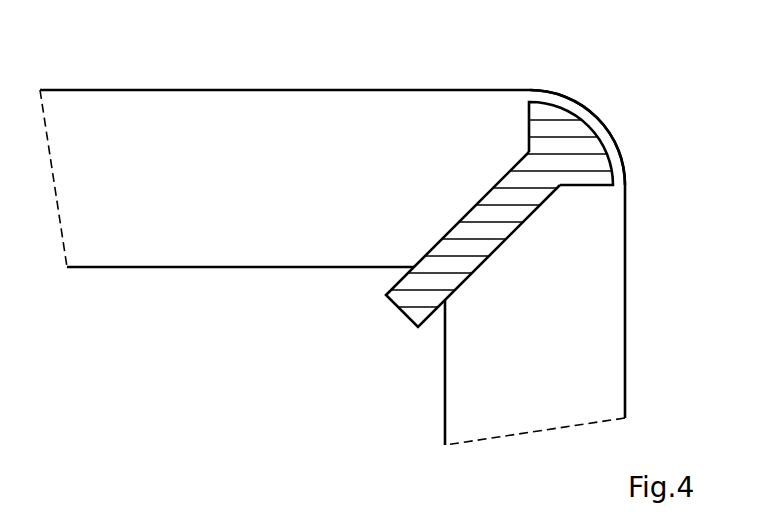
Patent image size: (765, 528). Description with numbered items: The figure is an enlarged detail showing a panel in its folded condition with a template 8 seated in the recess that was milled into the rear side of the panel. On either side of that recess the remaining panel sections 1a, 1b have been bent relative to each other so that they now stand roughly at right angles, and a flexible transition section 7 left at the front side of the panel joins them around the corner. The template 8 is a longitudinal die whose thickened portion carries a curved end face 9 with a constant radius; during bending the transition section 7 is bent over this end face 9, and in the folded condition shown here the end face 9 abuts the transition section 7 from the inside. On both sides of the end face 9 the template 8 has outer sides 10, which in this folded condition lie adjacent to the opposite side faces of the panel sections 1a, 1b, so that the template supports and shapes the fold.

The panel section 1a is at (600, 358).
The panel section 1b is at (175, 242).
The flexible transition section 7 is at (563, 100).
The template 8 is at (562, 148).
The curved end face 9 is at (605, 142).
The outer sides 10 is at (445, 236).